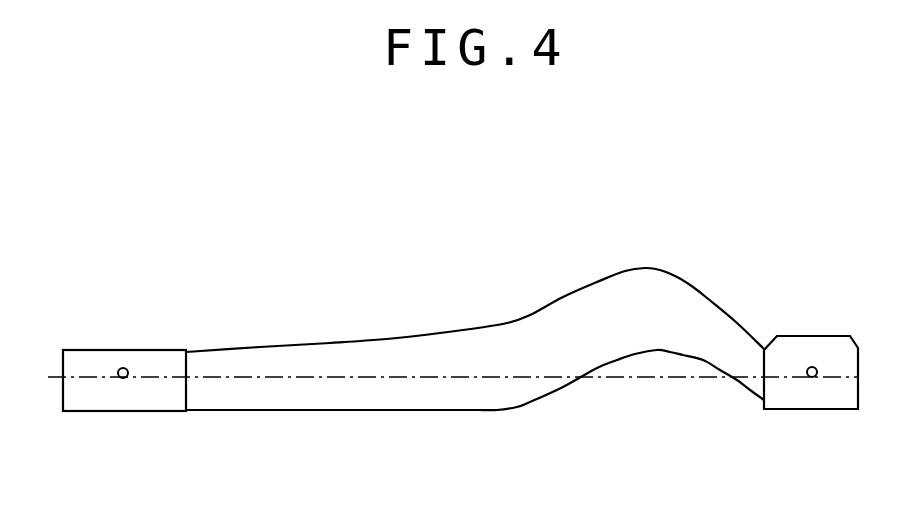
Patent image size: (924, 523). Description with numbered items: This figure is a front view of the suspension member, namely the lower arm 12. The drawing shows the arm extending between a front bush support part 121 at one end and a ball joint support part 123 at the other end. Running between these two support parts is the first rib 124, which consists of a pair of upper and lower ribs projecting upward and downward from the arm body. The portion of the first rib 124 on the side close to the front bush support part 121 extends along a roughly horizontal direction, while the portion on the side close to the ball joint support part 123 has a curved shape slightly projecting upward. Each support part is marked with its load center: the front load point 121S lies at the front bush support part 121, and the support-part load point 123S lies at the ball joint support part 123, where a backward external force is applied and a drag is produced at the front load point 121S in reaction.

The lower arm 12 is at (745, 258).
The front bush support part 121 is at (102, 395).
The front load point 121S is at (123, 368).
The ball joint support part 123 is at (847, 400).
The support-part load point 123S is at (813, 367).
The first rib 124 is at (585, 290).